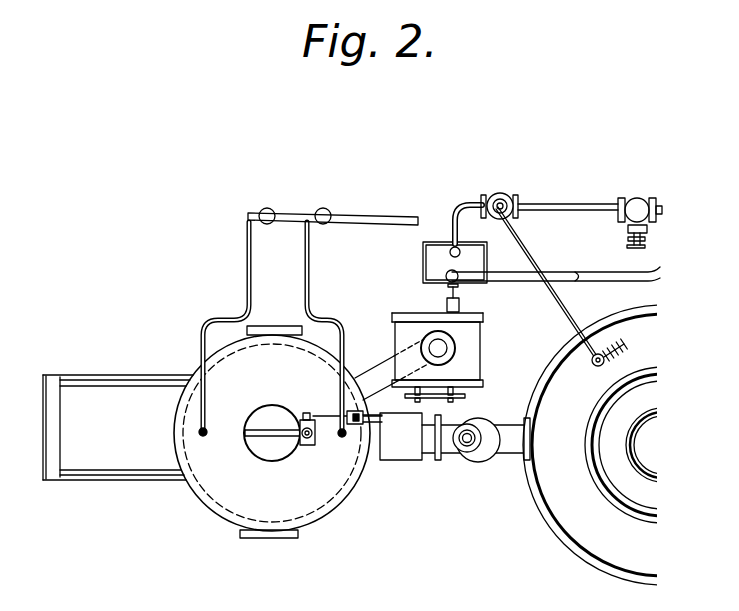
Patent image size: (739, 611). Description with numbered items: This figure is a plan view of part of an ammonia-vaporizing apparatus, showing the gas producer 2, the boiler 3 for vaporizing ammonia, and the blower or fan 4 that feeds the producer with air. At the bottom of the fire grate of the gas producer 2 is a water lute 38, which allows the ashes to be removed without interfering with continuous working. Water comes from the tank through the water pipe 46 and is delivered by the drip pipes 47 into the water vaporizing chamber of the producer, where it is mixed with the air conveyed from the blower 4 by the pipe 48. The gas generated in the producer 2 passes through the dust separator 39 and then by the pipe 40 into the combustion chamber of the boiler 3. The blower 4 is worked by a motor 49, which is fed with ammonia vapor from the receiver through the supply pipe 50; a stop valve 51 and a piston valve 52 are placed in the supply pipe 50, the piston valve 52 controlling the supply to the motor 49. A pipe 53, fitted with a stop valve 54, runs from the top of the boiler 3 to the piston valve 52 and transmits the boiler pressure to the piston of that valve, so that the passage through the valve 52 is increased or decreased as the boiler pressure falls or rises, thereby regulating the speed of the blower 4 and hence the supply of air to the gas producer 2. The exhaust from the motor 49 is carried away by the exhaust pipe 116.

The gas producer 2 is at (278, 432).
The boiler 3 is at (631, 445).
The blower 4 is at (437, 350).
The water lute 38 is at (118, 427).
The dust separator 39 is at (401, 436).
The pipe 40 is at (476, 438).
The water pipe 46 is at (388, 214).
The drip pipes 47 is at (250, 283).
The pipe 48 is at (368, 377).
The motor 49 is at (423, 261).
The supply pipe 50 is at (454, 219).
The stop valve 51 is at (640, 212).
The piston valve 52 is at (502, 197).
The pipe 53 is at (567, 318).
The stop valve 54 is at (600, 366).
The exhaust pipe 116 is at (627, 277).